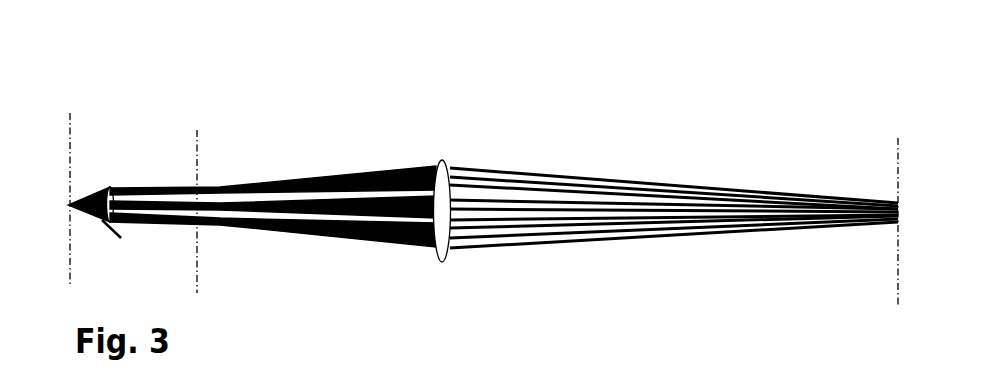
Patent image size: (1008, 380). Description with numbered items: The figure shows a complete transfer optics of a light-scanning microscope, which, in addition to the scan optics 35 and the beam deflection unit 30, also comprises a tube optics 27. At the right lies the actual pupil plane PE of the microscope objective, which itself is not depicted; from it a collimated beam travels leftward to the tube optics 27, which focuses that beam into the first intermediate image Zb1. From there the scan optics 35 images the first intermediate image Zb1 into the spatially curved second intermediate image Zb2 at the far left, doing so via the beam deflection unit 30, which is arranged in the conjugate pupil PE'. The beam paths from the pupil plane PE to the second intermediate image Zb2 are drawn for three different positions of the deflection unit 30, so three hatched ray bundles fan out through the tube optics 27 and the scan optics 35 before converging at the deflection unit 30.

The tube optics 27 is at (442, 160).
The beam deflection unit 30 is at (68, 205).
The scan optics 35 is at (110, 187).
The pupil plane PE is at (886, 188).
The conjugate pupil PE' is at (61, 174).
The first intermediate image Zb1 is at (197, 130).
The second intermediate image Zb2 is at (127, 228).